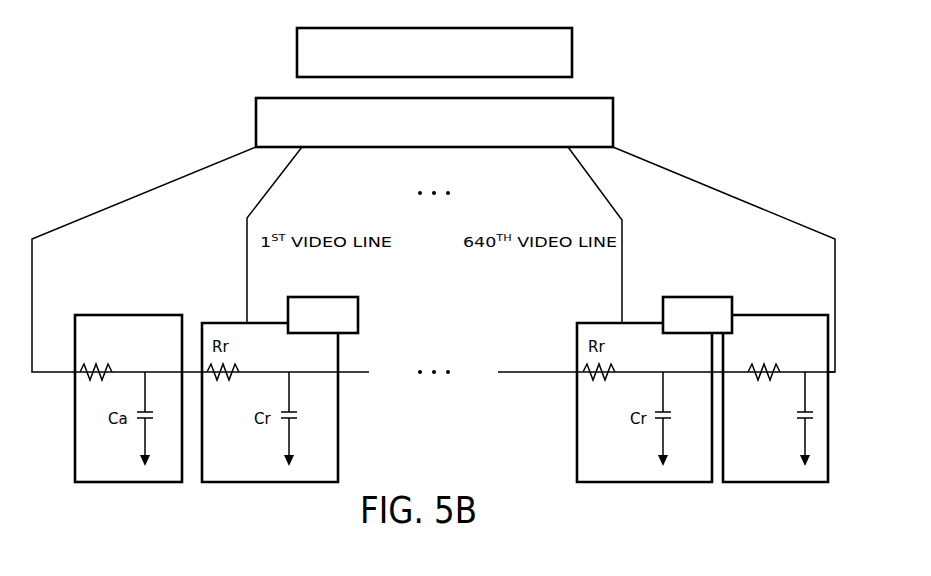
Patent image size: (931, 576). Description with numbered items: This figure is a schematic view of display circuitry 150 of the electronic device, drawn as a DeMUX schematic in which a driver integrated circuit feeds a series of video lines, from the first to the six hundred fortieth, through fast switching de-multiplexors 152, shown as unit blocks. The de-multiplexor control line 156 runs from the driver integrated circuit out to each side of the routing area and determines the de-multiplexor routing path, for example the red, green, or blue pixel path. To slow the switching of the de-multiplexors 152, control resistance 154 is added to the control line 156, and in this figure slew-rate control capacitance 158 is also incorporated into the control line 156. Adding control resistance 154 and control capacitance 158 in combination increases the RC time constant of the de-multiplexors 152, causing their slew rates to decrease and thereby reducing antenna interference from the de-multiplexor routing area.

The display circuitry 150 is at (224, 28).
The de-multiplexor 152 is at (356, 283).
The control resistance 154 is at (108, 368).
The de-multiplexor control line 156 is at (153, 172).
The control capacitance 158 is at (800, 424).